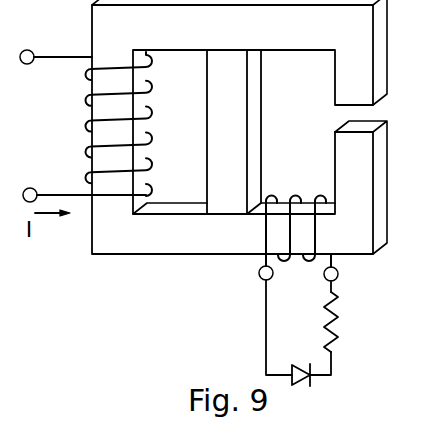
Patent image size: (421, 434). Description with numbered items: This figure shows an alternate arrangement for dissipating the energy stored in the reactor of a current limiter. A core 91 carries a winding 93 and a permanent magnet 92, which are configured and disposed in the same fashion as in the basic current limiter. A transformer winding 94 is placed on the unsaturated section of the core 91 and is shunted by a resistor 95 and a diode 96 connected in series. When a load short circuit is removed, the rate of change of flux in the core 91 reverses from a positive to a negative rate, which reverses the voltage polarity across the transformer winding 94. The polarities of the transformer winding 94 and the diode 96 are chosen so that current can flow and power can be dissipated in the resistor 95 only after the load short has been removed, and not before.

The core 91 is at (195, 246).
The permanent magnet 92 is at (255, 142).
The winding 93 is at (89, 126).
The transformer winding 94 is at (319, 196).
The resistor 95 is at (347, 322).
The diode 96 is at (295, 364).